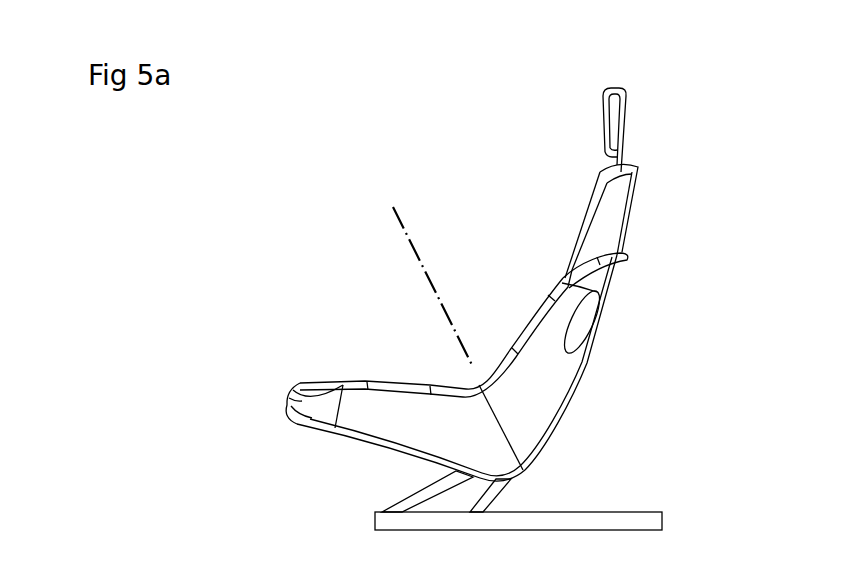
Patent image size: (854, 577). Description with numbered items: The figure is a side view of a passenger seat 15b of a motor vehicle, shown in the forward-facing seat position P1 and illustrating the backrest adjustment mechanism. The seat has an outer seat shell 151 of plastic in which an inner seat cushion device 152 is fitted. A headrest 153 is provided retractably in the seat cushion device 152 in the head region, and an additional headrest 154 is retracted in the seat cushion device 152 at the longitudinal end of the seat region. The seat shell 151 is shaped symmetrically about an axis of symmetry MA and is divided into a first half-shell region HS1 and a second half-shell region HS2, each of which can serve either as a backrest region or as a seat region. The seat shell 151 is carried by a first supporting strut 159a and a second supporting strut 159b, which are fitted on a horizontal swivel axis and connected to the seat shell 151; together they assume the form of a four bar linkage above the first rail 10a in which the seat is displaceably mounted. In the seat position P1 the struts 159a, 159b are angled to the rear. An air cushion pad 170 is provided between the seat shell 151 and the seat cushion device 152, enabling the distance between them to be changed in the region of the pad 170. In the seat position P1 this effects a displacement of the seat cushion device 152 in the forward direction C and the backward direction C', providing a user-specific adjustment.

The headrest 153 is at (620, 123).
The seat cushion device 152 is at (618, 220).
The seat shell 151 is at (440, 367).
The passenger seat 15b is at (582, 380).
The additional headrest 154 is at (292, 393).
The air cushion pad 170 is at (583, 318).
The first supporting strut 159a is at (417, 497).
The second supporting strut 159b is at (497, 495).
The first rail 10a is at (633, 518).
The seat position P1 is at (350, 181).
The axis of symmetry MA is at (407, 236).
The first half-shell region HS1 is at (389, 352).
The second half-shell region HS2 is at (491, 300).
The forward direction C is at (530, 198).
The backward direction C' is at (694, 198).